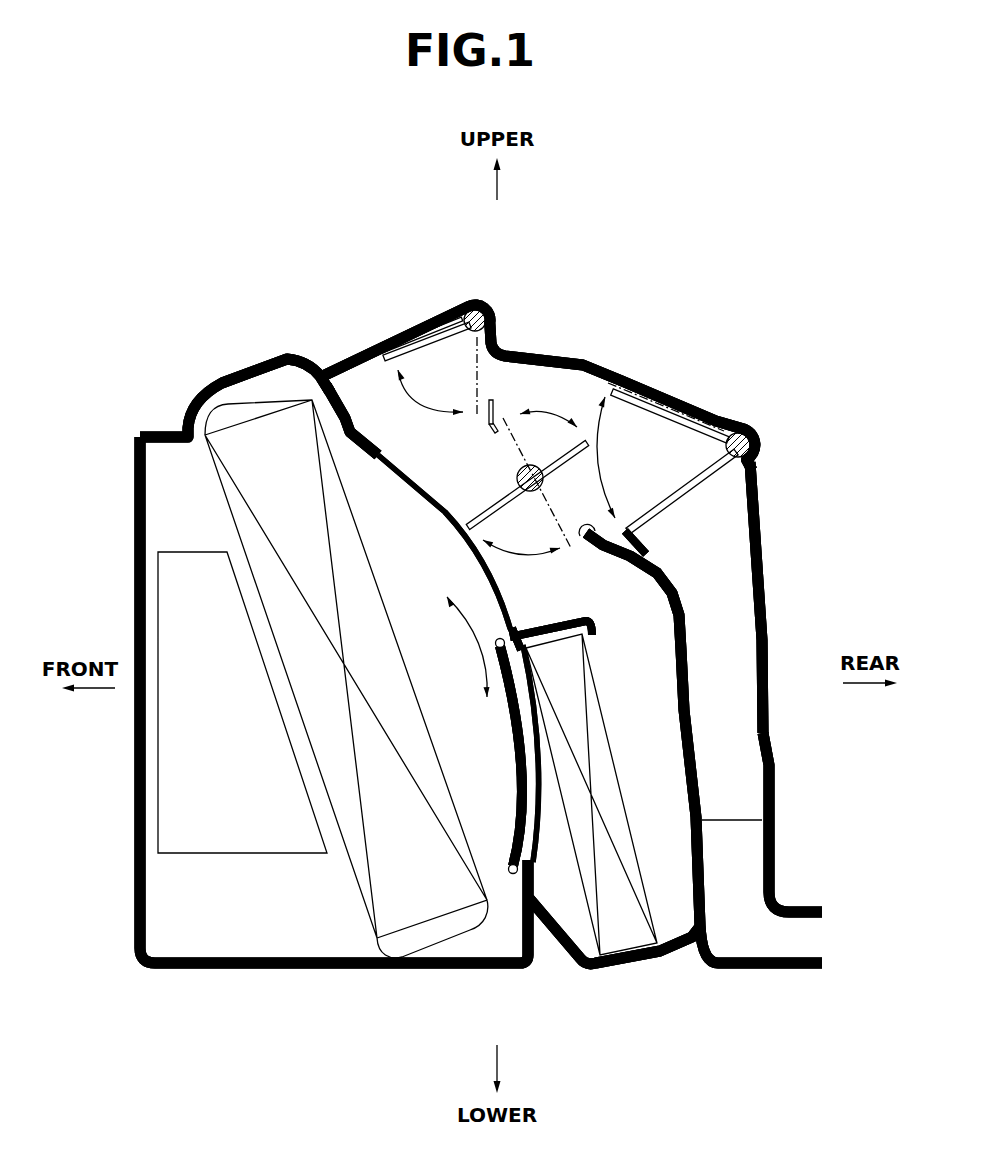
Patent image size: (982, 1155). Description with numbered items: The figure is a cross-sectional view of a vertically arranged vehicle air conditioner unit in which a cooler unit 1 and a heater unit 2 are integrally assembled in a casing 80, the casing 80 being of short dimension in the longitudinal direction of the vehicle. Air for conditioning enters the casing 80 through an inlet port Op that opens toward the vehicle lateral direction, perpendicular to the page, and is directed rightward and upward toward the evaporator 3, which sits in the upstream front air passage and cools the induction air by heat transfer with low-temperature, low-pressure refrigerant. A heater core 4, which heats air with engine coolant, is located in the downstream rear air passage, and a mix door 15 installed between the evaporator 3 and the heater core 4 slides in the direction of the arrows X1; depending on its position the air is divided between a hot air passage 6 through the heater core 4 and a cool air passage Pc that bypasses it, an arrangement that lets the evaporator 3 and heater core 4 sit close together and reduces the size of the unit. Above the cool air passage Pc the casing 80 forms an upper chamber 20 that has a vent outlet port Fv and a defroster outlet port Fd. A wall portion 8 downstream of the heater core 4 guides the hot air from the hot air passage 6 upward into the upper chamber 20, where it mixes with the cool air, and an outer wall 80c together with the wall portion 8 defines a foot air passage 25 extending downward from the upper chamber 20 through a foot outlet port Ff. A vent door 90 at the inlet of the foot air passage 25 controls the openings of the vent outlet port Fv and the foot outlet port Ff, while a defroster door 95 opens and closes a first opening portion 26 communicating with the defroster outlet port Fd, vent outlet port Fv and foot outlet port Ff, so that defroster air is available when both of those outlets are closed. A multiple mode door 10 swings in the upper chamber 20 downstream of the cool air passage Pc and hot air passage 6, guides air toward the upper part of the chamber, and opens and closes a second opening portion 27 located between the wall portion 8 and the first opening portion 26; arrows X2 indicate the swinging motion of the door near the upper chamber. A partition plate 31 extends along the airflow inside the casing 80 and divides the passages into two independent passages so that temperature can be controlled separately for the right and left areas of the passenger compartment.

The cooler unit 1 is at (220, 330).
The heater unit 2 is at (562, 389).
The evaporator 3 is at (423, 903).
The heater core 4 is at (630, 945).
The hot air passage 6 is at (641, 784).
The wall portion 8 is at (692, 697).
The multiple mode door 10 is at (540, 445).
The mix door 15 is at (517, 753).
The upper chamber 20 is at (461, 476).
The foot air passage 25 is at (735, 622).
The first opening portion 26 is at (492, 393).
The second opening portion 27 is at (592, 560).
The partition plate 31 is at (368, 417).
The casing 80 is at (243, 973).
The outer wall 80c is at (777, 780).
The VENT door 90 is at (688, 423).
The DEF door 95 is at (413, 350).
The DEF outlet port Fd is at (435, 318).
The VENT outlet port Fv is at (713, 415).
The foot outlet port Ff is at (650, 527).
The sliding direction of mix door X1 is at (474, 665).
The swing direction X2 is at (415, 392).
The cool air passage Pc is at (506, 589).
The inlet port Op is at (158, 736).